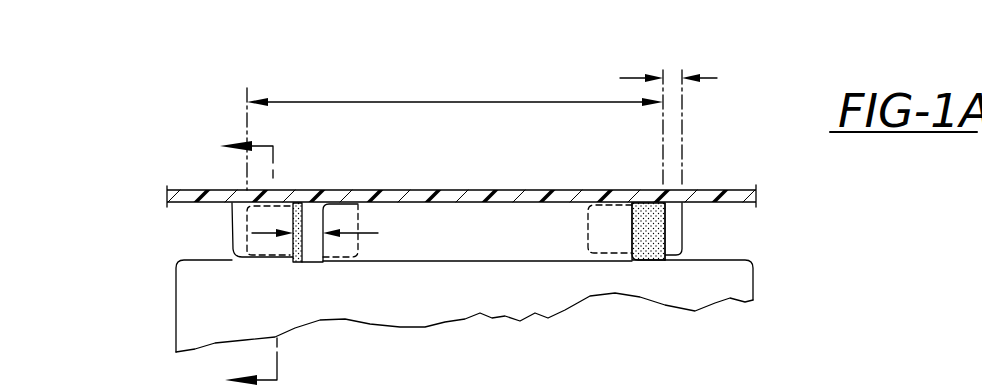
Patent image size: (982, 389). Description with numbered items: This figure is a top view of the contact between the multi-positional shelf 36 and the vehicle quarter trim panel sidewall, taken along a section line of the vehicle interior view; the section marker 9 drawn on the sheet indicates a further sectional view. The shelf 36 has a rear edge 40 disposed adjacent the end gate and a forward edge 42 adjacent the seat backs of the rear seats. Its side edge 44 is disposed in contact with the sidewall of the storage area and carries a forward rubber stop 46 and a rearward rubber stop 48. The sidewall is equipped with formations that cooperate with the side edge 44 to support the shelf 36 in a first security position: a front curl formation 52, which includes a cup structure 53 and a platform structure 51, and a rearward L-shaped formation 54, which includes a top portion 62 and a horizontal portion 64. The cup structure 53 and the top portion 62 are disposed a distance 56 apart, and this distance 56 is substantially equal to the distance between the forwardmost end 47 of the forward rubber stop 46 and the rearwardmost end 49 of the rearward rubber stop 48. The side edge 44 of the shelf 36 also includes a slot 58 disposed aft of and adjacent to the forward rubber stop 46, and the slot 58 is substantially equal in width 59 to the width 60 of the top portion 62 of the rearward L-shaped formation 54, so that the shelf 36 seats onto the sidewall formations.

The section line 9- 9 is at (248, 236).
The multi-positional shelf 36 is at (511, 286).
The rear edge 40 is at (755, 286).
The forward edge 42 is at (176, 287).
The side edge 44 is at (532, 212).
The forward rubber stop 46 is at (294, 265).
The forwardmost end 47 is at (250, 267).
The rearward rubber stop 48 is at (642, 250).
The rearwardmost end 49 is at (660, 240).
The platform structure 51 is at (363, 257).
The front curl formation 52 is at (200, 236).
The cup structure 53 is at (240, 250).
The rearward L-shaped formation 54 is at (712, 222).
The distance 56 is at (358, 100).
The slot 58 is at (313, 242).
The width 59 is at (378, 233).
The width 60 is at (717, 78).
The top portion 62 is at (677, 209).
The horizontal portion 64 is at (607, 240).